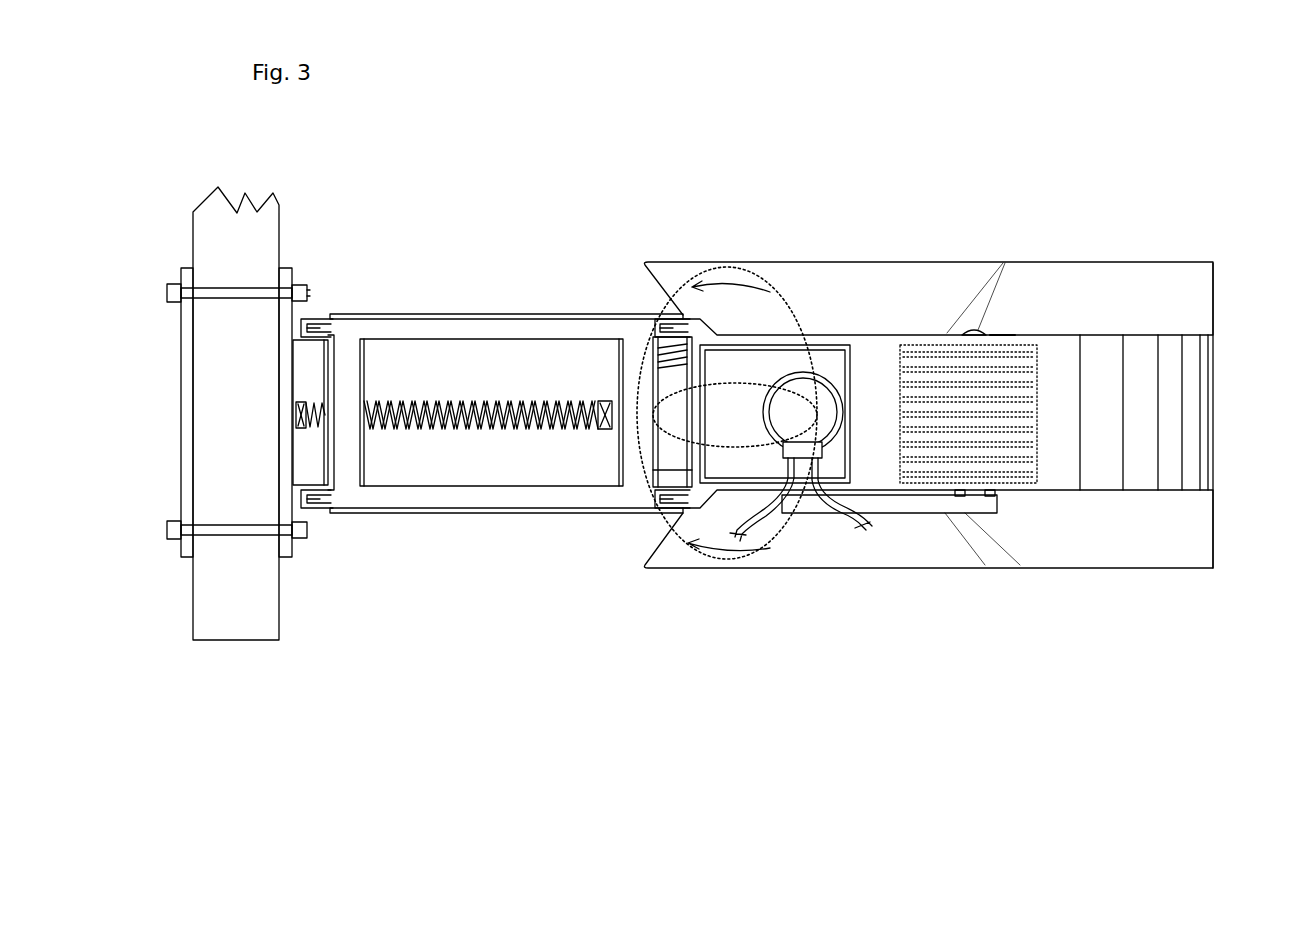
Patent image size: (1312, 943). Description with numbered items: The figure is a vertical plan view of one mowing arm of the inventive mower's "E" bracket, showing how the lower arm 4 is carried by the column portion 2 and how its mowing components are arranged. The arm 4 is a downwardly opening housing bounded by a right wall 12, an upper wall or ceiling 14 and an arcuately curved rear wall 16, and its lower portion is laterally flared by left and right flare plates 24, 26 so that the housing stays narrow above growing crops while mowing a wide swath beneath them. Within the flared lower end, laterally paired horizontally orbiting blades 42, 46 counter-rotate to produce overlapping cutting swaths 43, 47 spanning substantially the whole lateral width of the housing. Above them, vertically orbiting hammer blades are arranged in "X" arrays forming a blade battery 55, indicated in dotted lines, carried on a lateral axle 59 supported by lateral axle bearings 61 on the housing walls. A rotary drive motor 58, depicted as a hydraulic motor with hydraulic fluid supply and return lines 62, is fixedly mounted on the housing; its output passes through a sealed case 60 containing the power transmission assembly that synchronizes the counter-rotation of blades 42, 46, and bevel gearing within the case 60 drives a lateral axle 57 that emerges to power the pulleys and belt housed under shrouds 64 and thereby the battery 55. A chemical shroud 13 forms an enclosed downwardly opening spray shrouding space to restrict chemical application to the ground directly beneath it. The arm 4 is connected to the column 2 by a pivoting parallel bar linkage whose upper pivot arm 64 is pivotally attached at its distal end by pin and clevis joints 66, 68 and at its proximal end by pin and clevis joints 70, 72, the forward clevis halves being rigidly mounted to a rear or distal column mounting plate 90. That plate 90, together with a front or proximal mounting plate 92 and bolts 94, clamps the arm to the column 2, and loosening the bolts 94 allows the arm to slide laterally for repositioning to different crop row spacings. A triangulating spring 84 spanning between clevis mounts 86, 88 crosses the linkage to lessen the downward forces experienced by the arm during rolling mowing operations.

The column portion 2 is at (207, 600).
The lower arm 4 is at (705, 604).
The right wall 12 is at (891, 410).
The chemical shroud 13 is at (1188, 292).
The upper wall or ceiling 14 is at (883, 380).
The arcuately curved rear wall 16 is at (1173, 452).
The left flare plate 24 is at (657, 563).
The right flare plate 26 is at (903, 270).
The horizontally orbiting blade 42 is at (656, 352).
The cutting swath 43 is at (722, 267).
The horizontally orbiting blade 46 is at (686, 474).
The cutting swath 47 is at (770, 550).
The blade battery 55 is at (1003, 403).
The lateral axle 57 is at (800, 497).
The rotary drive motor 58 is at (830, 412).
The lateral axle 59 is at (983, 333).
The sealed case 60 is at (825, 362).
The lateral axle bearing 61 is at (1002, 333).
The hydraulic fluid supply and return lines 62 is at (853, 507).
The upper pivot arm 64 is at (467, 318).
The pin and clevis joint 66 is at (660, 503).
The pin and clevis joint 68 is at (653, 320).
The pin and clevis joint 70 is at (318, 517).
The pin and clevis joint 72 is at (317, 327).
The triangulating spring 84 is at (532, 397).
The clevis mount 86 is at (612, 430).
The clevis mount 88 is at (303, 403).
The rear or distal column mounting plate 90 is at (287, 450).
The front or proximal mounting plate 92 is at (185, 478).
The bolt 94 is at (220, 292).